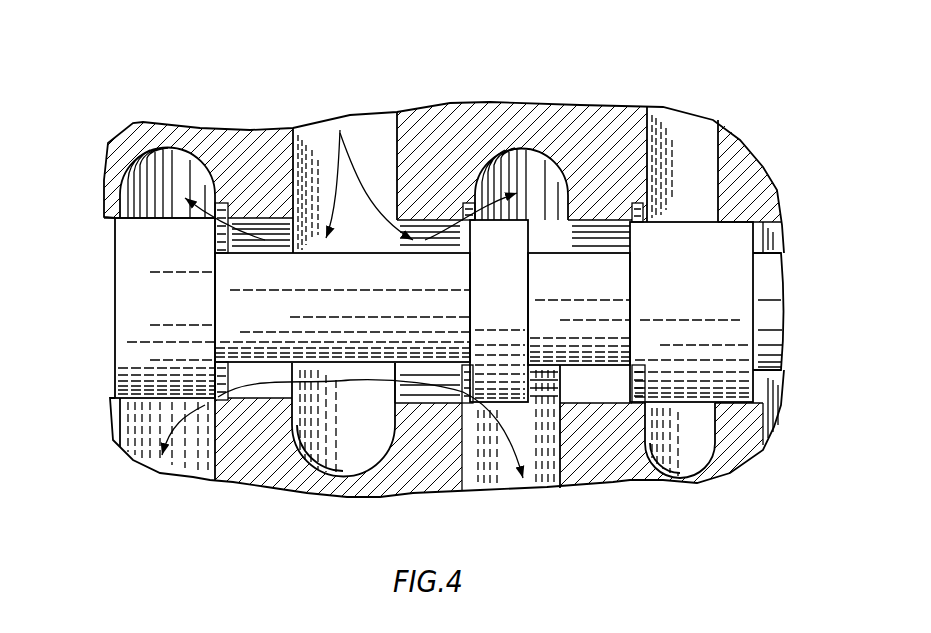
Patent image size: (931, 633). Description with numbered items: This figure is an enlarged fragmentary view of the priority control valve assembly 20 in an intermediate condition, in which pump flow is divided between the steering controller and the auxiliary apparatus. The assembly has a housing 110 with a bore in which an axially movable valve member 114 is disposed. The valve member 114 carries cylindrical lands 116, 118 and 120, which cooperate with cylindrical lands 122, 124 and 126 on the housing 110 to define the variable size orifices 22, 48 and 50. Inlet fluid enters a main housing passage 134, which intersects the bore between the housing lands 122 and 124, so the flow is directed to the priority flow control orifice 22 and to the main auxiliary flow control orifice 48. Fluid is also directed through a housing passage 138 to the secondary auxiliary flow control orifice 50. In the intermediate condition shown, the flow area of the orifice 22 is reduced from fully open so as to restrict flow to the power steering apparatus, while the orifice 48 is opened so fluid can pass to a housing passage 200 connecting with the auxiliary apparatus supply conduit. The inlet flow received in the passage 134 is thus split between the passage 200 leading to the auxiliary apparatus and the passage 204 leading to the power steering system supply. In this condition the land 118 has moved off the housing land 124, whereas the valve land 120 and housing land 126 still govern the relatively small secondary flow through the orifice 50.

The priority control valve assembly 20 is at (753, 80).
The priority flow control orifice 22 is at (228, 190).
The main auxiliary flow control orifice 48 is at (466, 190).
The secondary auxiliary flow control orifice 50 is at (633, 197).
The housing 110 is at (737, 437).
The valve member 114 is at (105, 316).
The cylindrical land 116 is at (133, 365).
The cylindrical land 118 is at (505, 308).
The cylindrical land 120 is at (737, 245).
The cylindrical housing land 122 is at (270, 398).
The cylindrical housing land 124 is at (423, 397).
The cylindrical housing land 126 is at (610, 398).
The main housing passage 134 is at (397, 130).
The housing passage 138 is at (720, 158).
The housing passage 200 is at (555, 473).
The passage 204 is at (185, 472).